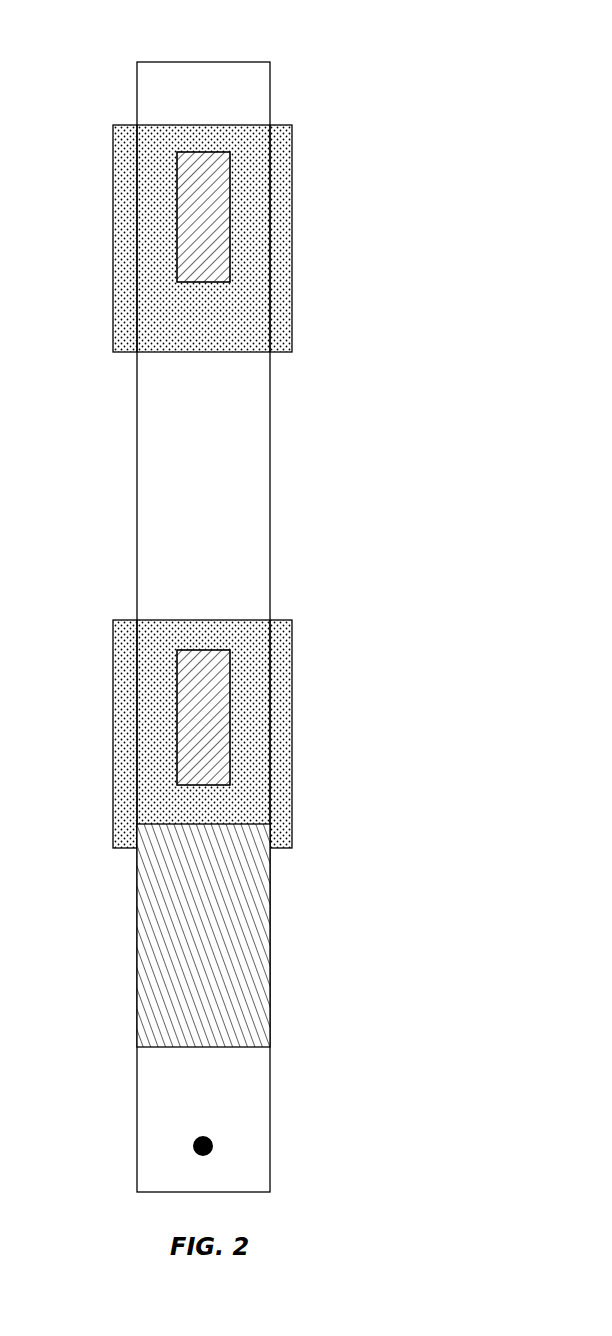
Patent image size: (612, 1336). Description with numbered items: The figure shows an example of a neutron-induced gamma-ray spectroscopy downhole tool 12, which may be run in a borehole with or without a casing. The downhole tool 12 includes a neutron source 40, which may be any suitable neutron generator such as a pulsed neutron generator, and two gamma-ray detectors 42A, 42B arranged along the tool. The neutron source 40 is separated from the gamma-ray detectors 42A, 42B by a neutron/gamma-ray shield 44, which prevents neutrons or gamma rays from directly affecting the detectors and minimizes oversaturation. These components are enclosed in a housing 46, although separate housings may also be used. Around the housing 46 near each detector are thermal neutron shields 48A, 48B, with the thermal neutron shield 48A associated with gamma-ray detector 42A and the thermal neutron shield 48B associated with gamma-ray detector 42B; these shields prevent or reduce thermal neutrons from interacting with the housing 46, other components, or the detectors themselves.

The downhole tool 12 is at (208, 602).
The neutron source 40 is at (213, 1137).
The gamma-ray detector 42A is at (230, 710).
The gamma-ray detector 42B is at (230, 215).
The neutron/gamma-ray shield 44 is at (270, 932).
The housing 46 is at (137, 487).
The thermal neutron shield 48A is at (113, 730).
The thermal neutron shield 48B is at (113, 232).